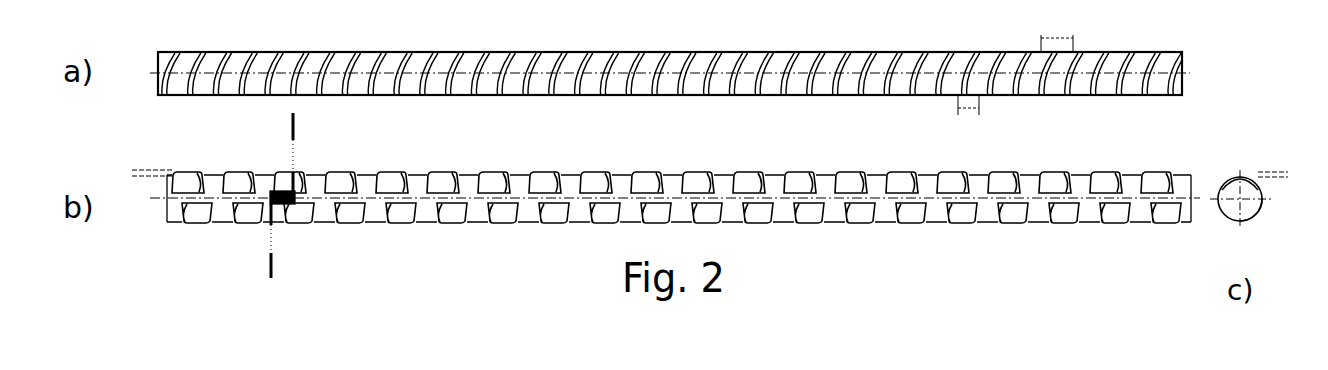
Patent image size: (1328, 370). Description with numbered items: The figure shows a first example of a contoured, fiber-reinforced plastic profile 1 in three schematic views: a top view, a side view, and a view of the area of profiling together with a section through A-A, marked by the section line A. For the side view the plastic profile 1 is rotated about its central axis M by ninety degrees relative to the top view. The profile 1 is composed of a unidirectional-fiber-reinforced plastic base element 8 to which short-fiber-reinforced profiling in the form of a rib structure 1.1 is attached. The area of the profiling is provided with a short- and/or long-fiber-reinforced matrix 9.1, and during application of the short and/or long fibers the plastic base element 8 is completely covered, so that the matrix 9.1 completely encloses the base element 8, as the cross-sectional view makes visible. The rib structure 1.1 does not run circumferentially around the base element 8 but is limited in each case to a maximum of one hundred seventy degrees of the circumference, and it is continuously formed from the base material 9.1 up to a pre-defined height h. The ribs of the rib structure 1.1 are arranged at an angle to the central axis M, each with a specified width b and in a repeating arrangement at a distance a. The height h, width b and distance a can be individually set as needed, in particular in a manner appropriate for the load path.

The contoured, fiber-reinforced plastic profile 1 is at (1160, 109).
The rib structure 1.1 is at (1047, 88).
The plastic base element 8 is at (1228, 213).
The short- and/or long-fiber-reinforced matrix 9.1 is at (1258, 215).
The central axis M is at (1185, 72).
The distance a is at (1057, 33).
The width b is at (968, 117).
The height h is at (708, 173).
The section A- A is at (298, 127).